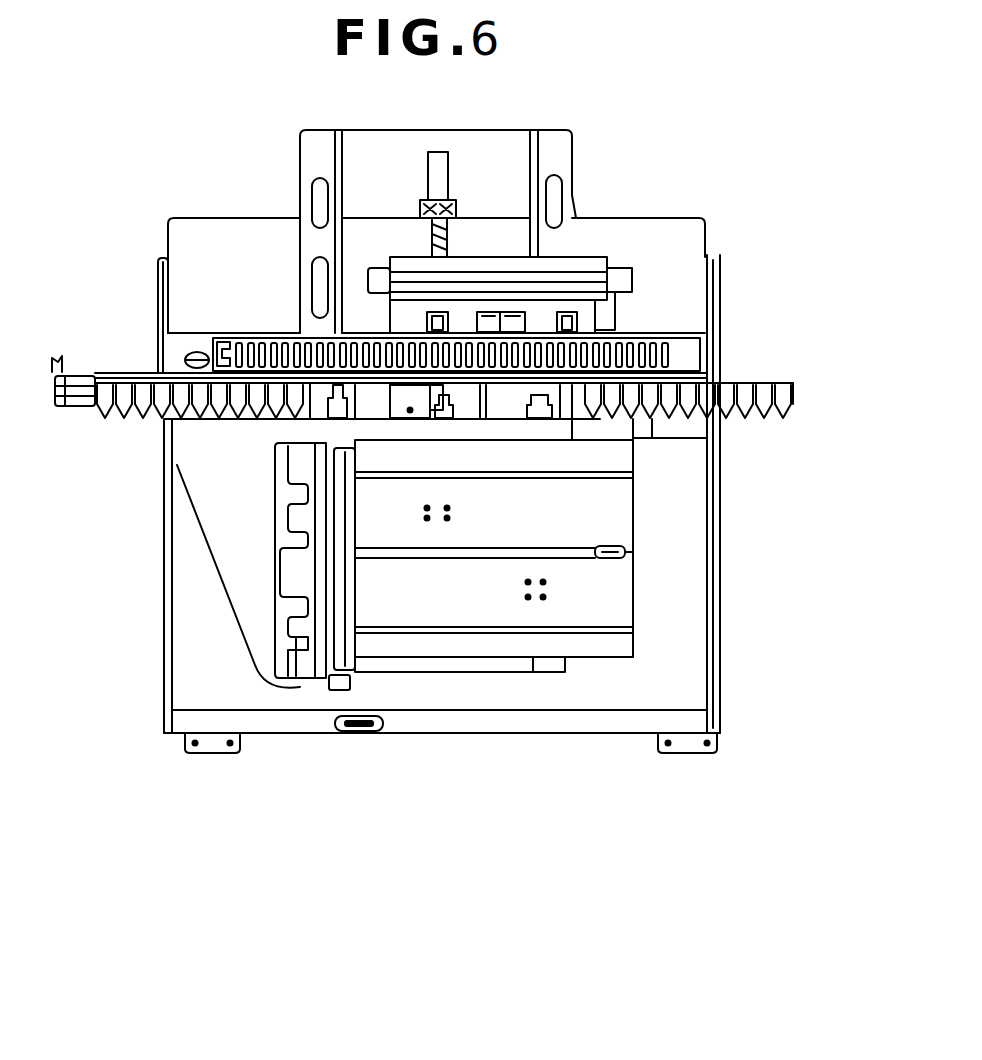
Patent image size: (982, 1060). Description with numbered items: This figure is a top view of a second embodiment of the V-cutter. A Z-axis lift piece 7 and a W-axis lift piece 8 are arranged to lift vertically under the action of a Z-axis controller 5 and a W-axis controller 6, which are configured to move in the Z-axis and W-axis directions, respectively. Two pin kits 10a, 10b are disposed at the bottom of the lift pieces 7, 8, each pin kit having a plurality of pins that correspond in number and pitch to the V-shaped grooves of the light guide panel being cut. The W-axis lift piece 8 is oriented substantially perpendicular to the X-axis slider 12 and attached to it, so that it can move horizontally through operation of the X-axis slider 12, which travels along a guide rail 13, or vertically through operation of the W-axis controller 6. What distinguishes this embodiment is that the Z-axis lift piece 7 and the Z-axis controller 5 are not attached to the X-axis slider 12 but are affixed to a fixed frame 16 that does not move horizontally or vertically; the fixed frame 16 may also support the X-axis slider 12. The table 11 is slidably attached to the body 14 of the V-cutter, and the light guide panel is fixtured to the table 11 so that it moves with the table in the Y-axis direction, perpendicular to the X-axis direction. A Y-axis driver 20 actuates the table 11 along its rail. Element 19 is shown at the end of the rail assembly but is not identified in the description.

The Z-axis controller 5 is at (497, 313).
The W-axis controller 6 is at (283, 617).
The Z-axis lift piece 7 is at (632, 282).
The W-axis lift piece 8 is at (348, 640).
The pin kit 10a is at (633, 265).
The pin kit 10b is at (333, 690).
The table 11 is at (610, 588).
The X-axis slider 12 is at (203, 480).
The guide rail 13 is at (700, 383).
The body 14 is at (680, 673).
The fixed frame 16 is at (688, 353).
The end bracket 19 is at (73, 368).
The Y-axis driver 20 is at (442, 160).